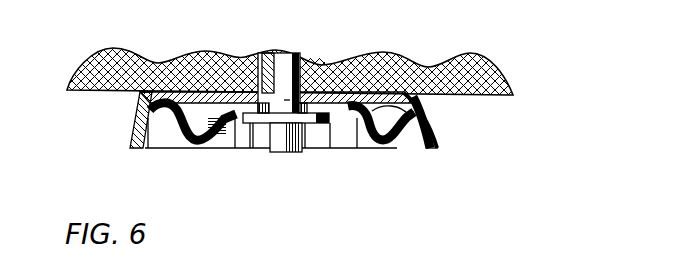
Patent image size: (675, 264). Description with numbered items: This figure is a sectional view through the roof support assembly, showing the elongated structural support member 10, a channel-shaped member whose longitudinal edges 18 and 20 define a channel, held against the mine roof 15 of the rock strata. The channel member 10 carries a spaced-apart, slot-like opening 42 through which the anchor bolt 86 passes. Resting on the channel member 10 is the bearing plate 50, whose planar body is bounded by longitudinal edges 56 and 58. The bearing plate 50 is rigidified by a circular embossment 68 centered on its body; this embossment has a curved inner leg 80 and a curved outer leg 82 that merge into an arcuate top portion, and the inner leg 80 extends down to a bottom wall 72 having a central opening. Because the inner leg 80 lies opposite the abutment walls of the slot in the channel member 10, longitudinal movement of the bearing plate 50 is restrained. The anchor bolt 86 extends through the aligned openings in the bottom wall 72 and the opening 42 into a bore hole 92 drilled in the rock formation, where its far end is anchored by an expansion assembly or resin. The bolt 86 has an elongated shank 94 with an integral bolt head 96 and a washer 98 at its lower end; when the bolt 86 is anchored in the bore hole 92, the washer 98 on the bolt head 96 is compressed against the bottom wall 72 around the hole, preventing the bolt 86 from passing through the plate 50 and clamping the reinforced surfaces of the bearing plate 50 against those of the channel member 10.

The elongated structural support member 10 is at (446, 119).
The mine roof 15 is at (113, 92).
The longitudinal edge 18 is at (432, 150).
The longitudinal edge 20 is at (133, 146).
The opening 42 is at (264, 83).
The bearing plate 50 is at (270, 156).
The longitudinal edge 56 is at (425, 150).
The longitudinal edge 58 is at (148, 149).
The circular embossment 68 is at (192, 149).
The bottom wall 72 is at (229, 116).
The curved inner leg 80 is at (358, 149).
The curved outer leg 82 is at (397, 141).
The anchor bolt 86 is at (303, 92).
The bore hole 92 is at (291, 55).
The elongated shank 94 is at (277, 55).
The bolt head 96 is at (297, 153).
The washer 98 is at (252, 149).